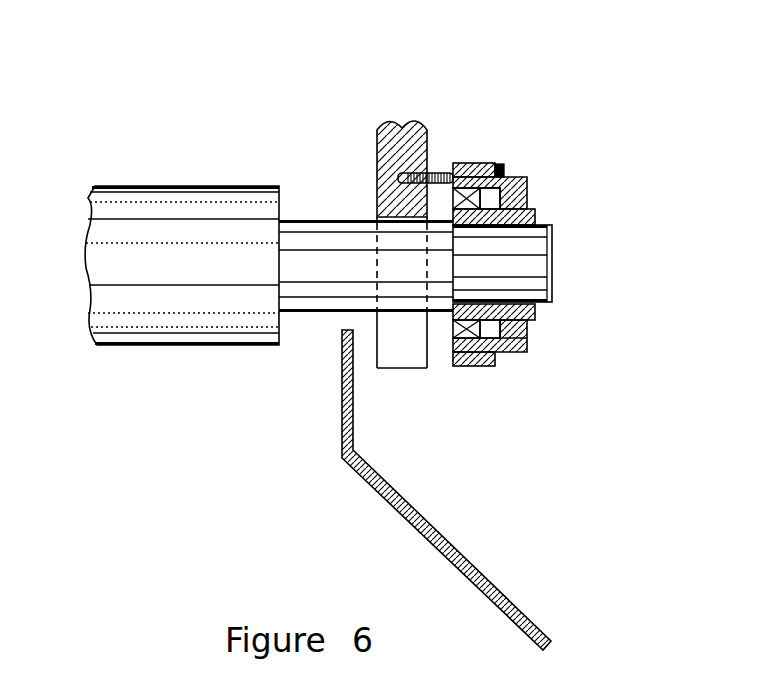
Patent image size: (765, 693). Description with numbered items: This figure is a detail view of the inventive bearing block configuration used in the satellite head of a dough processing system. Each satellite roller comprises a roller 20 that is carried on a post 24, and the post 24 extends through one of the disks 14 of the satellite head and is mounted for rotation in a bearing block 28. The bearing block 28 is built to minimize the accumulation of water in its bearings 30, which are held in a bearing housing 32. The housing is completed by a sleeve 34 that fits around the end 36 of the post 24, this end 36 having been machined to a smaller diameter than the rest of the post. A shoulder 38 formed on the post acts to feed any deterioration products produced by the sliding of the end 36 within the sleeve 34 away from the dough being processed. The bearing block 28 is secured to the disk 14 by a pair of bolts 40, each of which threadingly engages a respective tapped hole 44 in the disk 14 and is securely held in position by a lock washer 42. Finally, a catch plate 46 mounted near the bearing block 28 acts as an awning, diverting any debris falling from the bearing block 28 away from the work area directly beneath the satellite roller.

The disk 14 is at (377, 140).
The roller 20 is at (127, 345).
The post 24 is at (313, 218).
The bearing block 28 is at (479, 163).
The bearing 30 is at (497, 352).
The bearing housing 32 is at (529, 338).
The sleeve 34 is at (535, 310).
The end 36 is at (537, 266).
The shoulder 38 is at (454, 340).
The bolt 40 is at (512, 176).
The lock washer 42 is at (506, 166).
The tapped hole 44 is at (428, 130).
The catch plate 46 is at (342, 405).